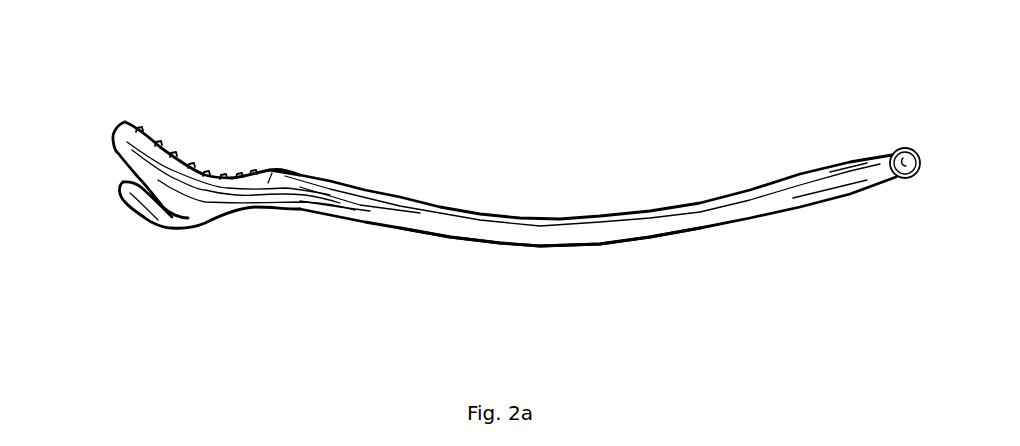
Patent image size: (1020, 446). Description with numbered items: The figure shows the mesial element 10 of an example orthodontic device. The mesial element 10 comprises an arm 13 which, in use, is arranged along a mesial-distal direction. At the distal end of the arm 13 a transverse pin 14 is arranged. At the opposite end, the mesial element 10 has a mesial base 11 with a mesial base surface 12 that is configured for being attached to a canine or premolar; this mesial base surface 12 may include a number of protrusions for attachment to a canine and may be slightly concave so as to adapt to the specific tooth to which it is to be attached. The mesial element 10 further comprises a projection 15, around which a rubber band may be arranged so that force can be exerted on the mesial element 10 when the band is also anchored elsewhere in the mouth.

The mesial element 10 is at (518, 202).
The mesial base 11 is at (282, 167).
The mesial base surface 12 is at (173, 152).
The arm 13 is at (567, 232).
The transverse pin 14 is at (886, 147).
The projection 15 is at (127, 203).